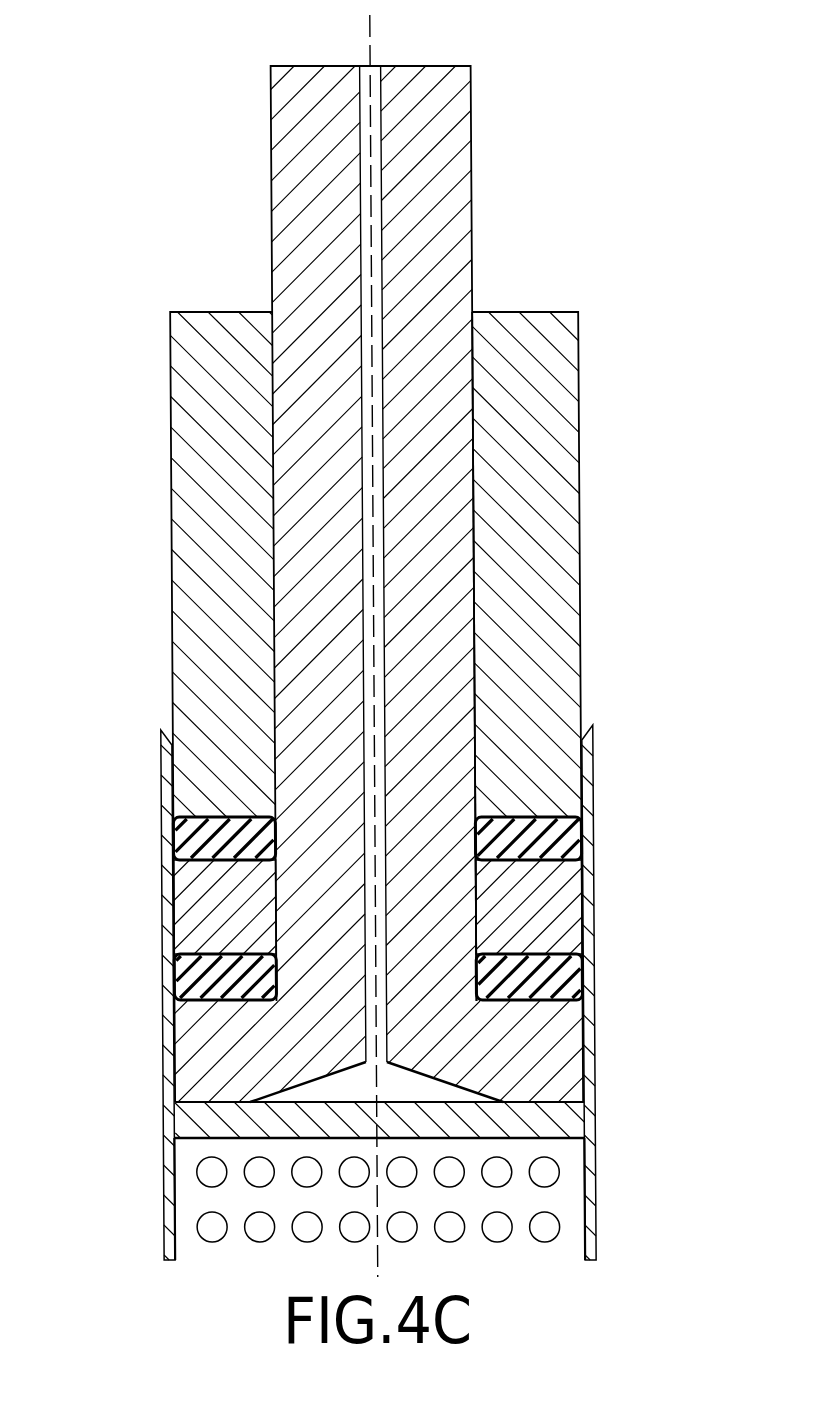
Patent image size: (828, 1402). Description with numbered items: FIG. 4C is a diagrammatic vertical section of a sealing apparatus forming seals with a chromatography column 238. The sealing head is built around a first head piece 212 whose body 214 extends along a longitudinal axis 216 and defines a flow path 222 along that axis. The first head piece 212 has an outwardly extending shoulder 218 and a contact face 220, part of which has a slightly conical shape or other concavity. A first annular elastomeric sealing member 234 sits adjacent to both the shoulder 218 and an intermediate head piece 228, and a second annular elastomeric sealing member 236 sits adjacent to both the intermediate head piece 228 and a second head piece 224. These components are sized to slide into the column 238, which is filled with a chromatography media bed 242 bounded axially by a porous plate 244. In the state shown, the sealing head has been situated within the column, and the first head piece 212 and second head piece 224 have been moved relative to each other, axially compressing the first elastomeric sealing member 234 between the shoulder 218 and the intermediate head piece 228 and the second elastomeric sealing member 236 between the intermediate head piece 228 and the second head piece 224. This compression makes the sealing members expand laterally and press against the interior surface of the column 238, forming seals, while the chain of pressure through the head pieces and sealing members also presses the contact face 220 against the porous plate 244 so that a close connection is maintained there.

The first head piece 212 is at (473, 393).
The body 214 is at (450, 575).
The longitudinal axis 216 is at (366, 19).
The shoulder 218 is at (200, 1052).
The contact face 220 is at (227, 1105).
The flow path 222 is at (385, 150).
The second head piece 224 is at (182, 572).
The intermediate head piece 228 is at (195, 912).
The first annular elastomeric sealing member 234 is at (183, 978).
The second annular elastomeric sealing member 236 is at (183, 838).
The column 238 is at (167, 1230).
The chromatography media bed 242 is at (550, 1222).
The porous plate 244 is at (565, 1115).